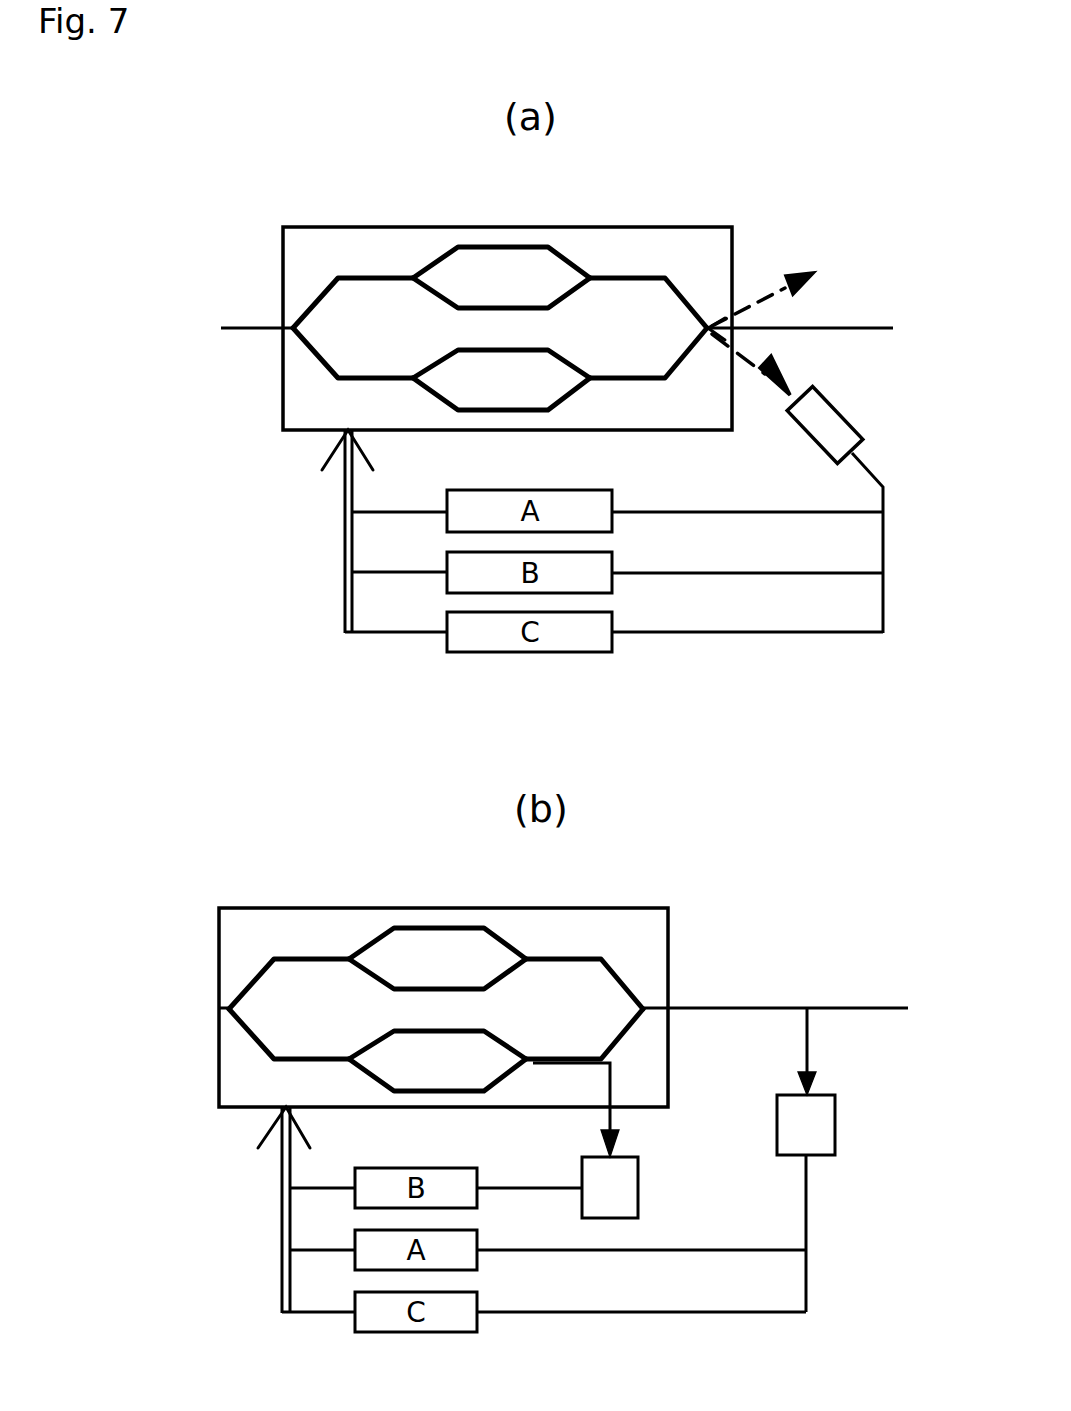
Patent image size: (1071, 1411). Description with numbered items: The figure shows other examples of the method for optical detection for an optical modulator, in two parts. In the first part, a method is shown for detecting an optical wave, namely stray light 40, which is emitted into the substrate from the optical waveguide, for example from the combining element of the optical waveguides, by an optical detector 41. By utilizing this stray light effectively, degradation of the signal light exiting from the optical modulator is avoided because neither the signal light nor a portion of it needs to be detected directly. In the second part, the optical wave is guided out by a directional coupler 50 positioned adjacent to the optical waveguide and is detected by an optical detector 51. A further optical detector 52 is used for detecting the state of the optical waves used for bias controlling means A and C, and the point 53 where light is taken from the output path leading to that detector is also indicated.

The optical wave (stray light) 40 is at (745, 356).
The optical detector 41 is at (833, 438).
The directional coupler 50 is at (640, 1047).
The optical detector 51 is at (610, 1187).
The optical detector 52 is at (806, 1203).
The optical branching point 53 is at (807, 1008).